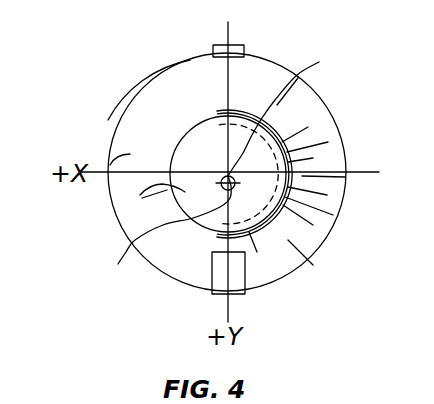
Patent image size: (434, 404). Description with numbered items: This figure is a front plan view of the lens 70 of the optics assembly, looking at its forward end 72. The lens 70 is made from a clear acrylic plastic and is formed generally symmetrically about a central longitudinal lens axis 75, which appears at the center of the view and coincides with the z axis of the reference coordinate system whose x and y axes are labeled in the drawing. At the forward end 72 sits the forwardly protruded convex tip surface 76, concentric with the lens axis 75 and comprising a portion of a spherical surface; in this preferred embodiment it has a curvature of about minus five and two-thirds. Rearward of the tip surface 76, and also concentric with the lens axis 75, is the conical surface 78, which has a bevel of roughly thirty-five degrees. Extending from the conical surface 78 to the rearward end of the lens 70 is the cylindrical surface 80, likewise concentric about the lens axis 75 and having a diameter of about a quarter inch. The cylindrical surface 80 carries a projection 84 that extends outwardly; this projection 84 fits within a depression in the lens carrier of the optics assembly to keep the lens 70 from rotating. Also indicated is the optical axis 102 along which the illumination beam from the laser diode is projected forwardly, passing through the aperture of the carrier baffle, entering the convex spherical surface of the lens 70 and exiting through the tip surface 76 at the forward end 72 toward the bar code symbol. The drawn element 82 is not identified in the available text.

The lens 70 is at (157, 291).
The forward end 72 is at (277, 219).
The lens axis 75 is at (289, 157).
The tip surface 76 is at (140, 195).
The conical surface 78 is at (110, 165).
The cylindrical surface 80 is at (124, 117).
The lower mounting block 82 is at (237, 294).
The projection 84 is at (238, 47).
The optical axis 102 is at (161, 236).